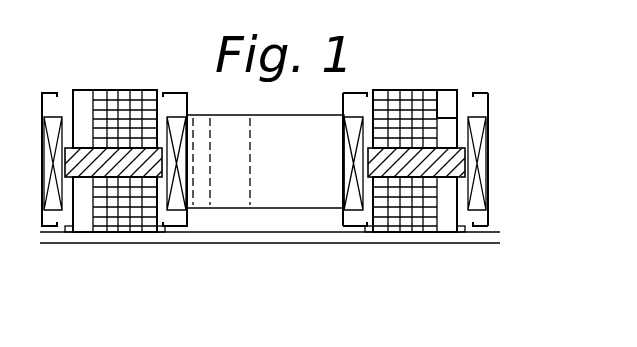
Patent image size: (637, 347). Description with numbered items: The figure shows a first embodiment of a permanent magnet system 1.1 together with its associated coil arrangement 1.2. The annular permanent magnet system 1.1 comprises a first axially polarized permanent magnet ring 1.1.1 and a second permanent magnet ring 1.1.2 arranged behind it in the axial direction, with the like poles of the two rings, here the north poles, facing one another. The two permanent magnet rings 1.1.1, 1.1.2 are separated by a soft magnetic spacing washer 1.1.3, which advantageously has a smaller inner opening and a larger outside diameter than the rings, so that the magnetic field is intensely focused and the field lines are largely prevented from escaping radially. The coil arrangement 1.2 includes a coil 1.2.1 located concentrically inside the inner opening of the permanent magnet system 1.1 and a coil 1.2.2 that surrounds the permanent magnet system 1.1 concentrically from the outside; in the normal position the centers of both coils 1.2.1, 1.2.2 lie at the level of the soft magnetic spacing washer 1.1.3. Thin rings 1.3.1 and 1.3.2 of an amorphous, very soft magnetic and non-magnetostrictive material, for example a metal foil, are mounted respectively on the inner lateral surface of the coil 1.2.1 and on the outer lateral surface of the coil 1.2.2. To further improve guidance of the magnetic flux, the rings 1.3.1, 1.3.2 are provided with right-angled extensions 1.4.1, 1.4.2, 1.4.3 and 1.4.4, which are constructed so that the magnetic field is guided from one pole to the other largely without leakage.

The permanent magnet system 1.1 is at (410, 86).
The first axially polarized permanent magnet ring 1.1.1 is at (455, 108).
The second permanent magnet ring 1.1.2 is at (425, 210).
The soft magnetic spacing washer 1.1.3 is at (418, 165).
The coil arrangement 1.2 is at (57, 226).
The coil 1.2.1 is at (352, 228).
The coil 1.2.2 is at (485, 193).
The thin ring 1.3.1 is at (344, 162).
The thin ring 1.3.2 is at (490, 151).
The right-angled extension 1.4.1 is at (351, 91).
The right-angled extension 1.4.2 is at (347, 233).
The right-angled extension 1.4.3 is at (477, 92).
The right-angled extension 1.4.4 is at (480, 228).